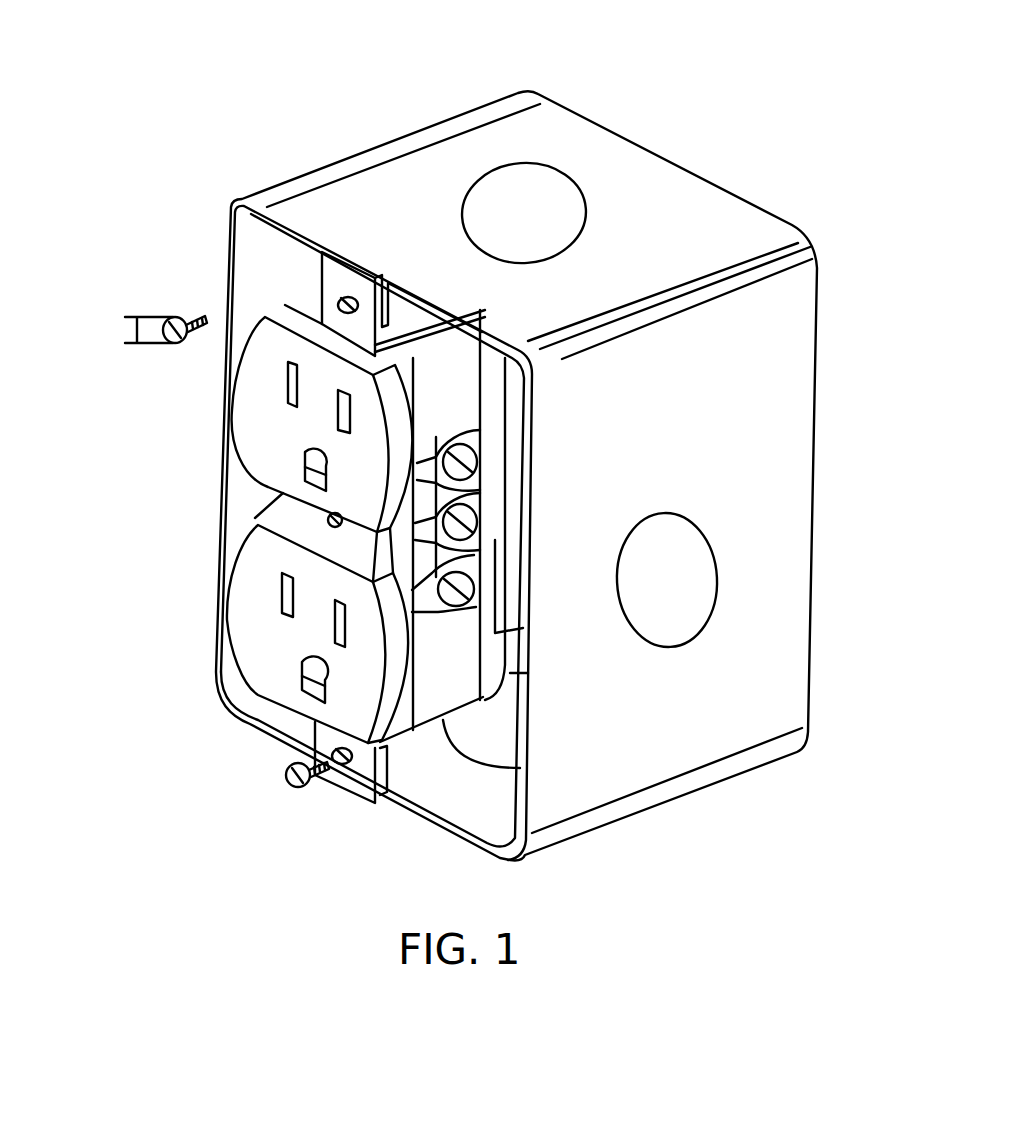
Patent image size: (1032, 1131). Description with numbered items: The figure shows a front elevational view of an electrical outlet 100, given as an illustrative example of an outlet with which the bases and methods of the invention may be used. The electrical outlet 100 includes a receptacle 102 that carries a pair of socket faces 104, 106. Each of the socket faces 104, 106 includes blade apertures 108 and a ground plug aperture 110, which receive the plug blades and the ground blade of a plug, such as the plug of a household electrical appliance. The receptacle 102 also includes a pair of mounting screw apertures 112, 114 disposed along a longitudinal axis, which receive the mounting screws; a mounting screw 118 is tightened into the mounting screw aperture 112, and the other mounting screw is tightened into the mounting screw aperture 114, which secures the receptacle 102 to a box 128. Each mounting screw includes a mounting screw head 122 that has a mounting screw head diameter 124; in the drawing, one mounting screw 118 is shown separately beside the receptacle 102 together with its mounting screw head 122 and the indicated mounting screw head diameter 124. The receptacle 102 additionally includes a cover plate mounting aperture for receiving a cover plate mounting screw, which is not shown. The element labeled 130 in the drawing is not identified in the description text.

The electrical outlet 100 is at (362, 129).
The receptacle 102 is at (330, 267).
The socket face 104 is at (262, 432).
The socket face 106 is at (248, 620).
The blade apertures 108 is at (285, 590).
The ground plug aperture 110 is at (302, 668).
The mounting screw aperture 112 is at (340, 302).
The mounting screw aperture 114 is at (315, 732).
The mounting screw 118 is at (158, 330).
The mounting screw head 122 is at (178, 344).
The mounting screw head diameter 124 is at (133, 326).
The box 128 is at (638, 197).
The center screw 130 is at (330, 518).